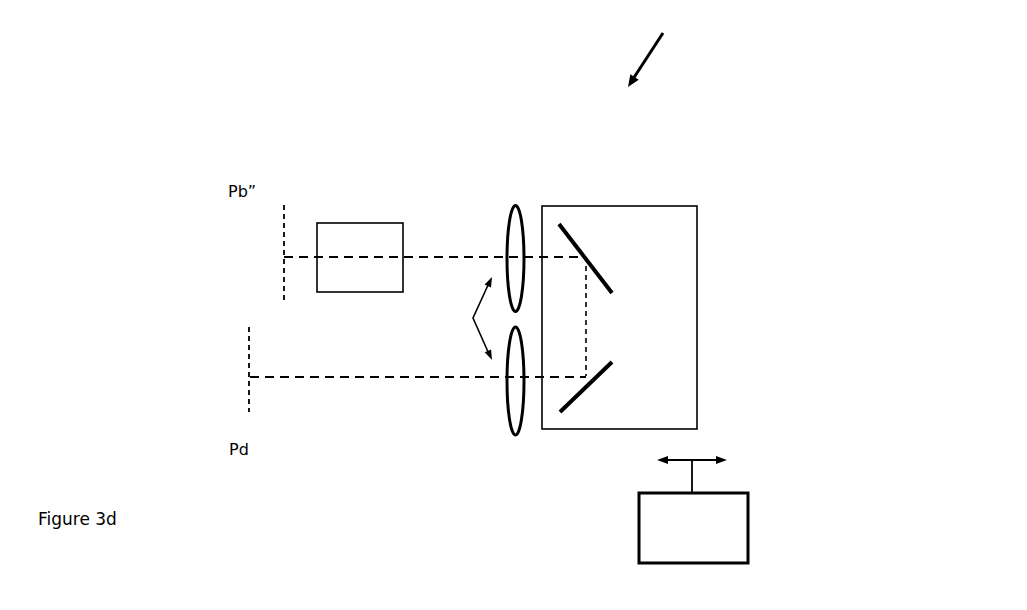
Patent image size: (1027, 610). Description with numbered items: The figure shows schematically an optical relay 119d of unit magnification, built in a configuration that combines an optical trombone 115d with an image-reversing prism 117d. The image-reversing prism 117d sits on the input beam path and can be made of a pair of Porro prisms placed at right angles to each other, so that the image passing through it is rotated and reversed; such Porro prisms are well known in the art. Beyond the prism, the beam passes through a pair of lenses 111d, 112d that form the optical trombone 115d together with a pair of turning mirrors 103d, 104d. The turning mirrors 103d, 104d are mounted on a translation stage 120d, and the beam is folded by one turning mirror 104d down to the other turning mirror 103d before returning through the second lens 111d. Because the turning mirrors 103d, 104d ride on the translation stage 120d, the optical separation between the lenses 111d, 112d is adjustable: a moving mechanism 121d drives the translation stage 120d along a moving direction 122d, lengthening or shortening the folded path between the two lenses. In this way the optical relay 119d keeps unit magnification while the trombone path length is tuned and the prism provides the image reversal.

The image-reversing prism 117d is at (342, 225).
The lens 112d is at (518, 210).
The lens 111d is at (517, 427).
The optical trombone 115d is at (446, 318).
The translation stage 120d is at (690, 285).
The turning mirror 104d is at (577, 240).
The turning mirror 103d is at (580, 397).
The moving direction 122d is at (728, 473).
The moving mechanism 121d is at (742, 533).
The optical relay 119d is at (665, 48).